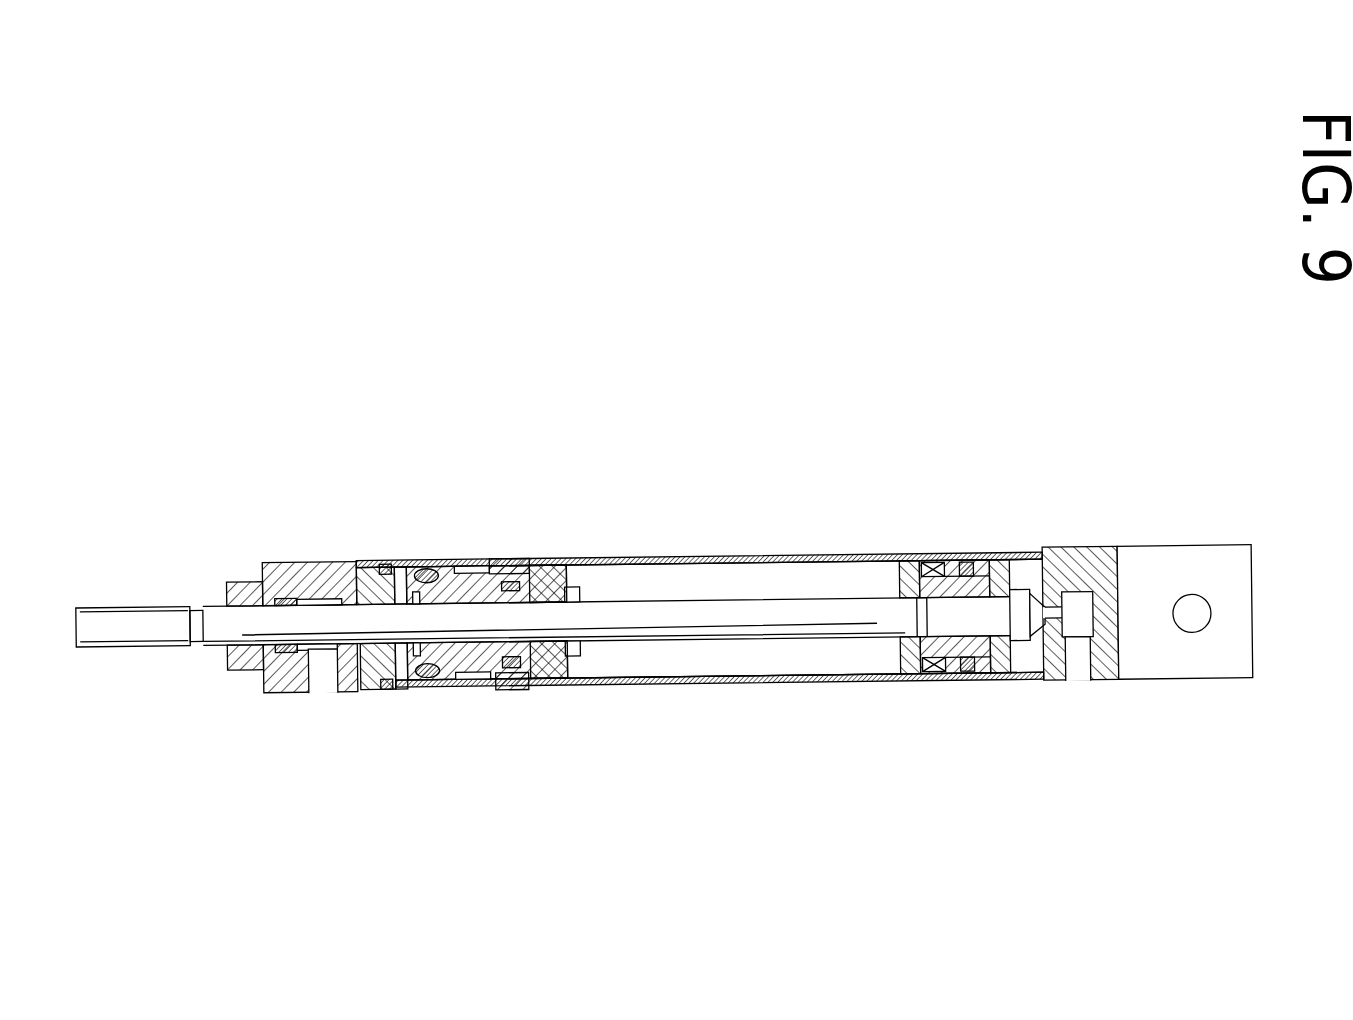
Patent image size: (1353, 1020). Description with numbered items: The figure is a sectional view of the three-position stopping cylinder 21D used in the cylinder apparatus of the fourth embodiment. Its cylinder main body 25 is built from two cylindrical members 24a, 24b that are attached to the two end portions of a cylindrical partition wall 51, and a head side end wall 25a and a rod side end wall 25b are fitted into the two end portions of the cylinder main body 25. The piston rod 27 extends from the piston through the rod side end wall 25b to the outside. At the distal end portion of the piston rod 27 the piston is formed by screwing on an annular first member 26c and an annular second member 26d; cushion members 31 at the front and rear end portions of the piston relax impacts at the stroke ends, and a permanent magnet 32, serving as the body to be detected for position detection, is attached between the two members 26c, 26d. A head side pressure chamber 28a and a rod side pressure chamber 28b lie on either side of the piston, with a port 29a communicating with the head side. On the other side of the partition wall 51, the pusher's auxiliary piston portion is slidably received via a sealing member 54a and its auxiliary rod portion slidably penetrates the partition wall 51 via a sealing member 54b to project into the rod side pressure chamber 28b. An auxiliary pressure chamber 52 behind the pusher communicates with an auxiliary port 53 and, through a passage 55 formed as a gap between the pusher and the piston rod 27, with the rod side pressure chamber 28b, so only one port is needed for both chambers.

The 3-position stopping cylinder 21D is at (663, 559).
The cylindrical member 24a is at (836, 557).
The cylindrical member 24b is at (448, 554).
The cylinder main body 25 is at (720, 556).
The head side end wall 25a is at (1187, 556).
The rod side end wall 25b is at (318, 554).
The first member 26c is at (984, 560).
The second member 26d is at (931, 562).
The piston rod 27 is at (759, 628).
The head side pressure chamber 28a is at (1021, 637).
The rod side pressure chamber 28b is at (677, 660).
The port 29a is at (1081, 670).
The cushion members 31 is at (899, 663).
The permanent magnet 32 is at (934, 676).
The partition wall 51 is at (511, 556).
The auxiliary pressure chamber 52 is at (398, 665).
The auxiliary port 53 is at (320, 678).
The sealing member 54a is at (426, 685).
The sealing member 54b is at (518, 688).
The passage 55 is at (551, 687).